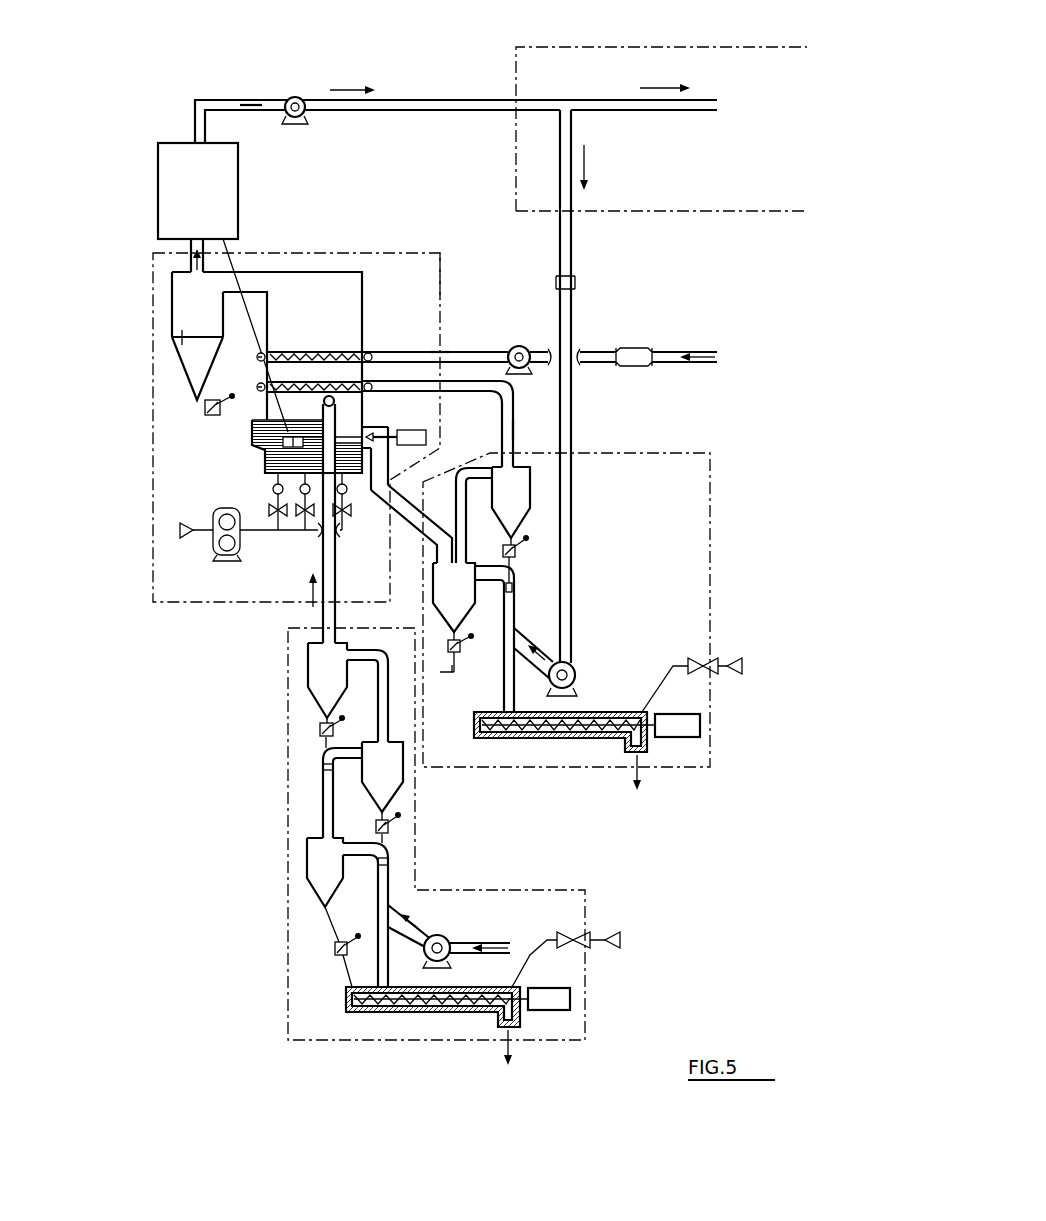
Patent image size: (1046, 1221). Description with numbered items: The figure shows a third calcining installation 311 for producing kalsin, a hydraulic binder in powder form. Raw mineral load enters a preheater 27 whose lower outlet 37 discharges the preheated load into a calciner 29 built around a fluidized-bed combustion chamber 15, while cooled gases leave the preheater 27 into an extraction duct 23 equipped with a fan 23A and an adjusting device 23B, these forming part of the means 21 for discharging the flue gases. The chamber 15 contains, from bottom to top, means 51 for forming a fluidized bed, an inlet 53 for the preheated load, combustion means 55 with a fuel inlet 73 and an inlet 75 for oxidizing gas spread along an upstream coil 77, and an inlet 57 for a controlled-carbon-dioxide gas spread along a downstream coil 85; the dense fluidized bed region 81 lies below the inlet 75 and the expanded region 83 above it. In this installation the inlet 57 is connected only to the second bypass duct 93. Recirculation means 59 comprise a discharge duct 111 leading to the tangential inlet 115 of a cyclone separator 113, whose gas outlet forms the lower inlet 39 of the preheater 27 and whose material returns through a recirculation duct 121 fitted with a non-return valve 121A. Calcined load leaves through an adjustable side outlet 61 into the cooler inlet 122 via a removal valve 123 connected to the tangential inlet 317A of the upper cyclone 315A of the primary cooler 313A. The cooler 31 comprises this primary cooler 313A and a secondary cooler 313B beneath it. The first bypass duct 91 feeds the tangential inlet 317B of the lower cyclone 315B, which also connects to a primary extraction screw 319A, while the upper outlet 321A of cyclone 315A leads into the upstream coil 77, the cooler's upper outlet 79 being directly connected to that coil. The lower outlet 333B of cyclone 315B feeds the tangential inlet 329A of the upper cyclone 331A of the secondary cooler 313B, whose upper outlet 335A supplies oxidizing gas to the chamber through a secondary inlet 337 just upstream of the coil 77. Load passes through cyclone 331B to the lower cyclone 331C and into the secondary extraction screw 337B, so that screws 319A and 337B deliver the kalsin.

The installation 311 is at (198, 76).
The means for discharging the flue gases 21 is at (515, 62).
The duct 23 is at (370, 115).
The fan 23A is at (293, 97).
The device for adjusting the fan 23B is at (259, 104).
The preheater 27 is at (198, 191).
The lower inlet 39 is at (190, 246).
The fluidized-bed combustion chamber 15 is at (429, 275).
The calciner 29 is at (153, 492).
The first bypass duct 91 is at (572, 310).
The second bypass duct 93 is at (667, 352).
The discharge duct 111 is at (270, 271).
The lower outlet 37 is at (238, 281).
The region of expanded fluidized bed 83 is at (351, 302).
The means for recirculating the calcined mineral load 59 is at (165, 320).
The cyclone separator 113 is at (180, 343).
The tangential inlet 115 is at (233, 258).
The downstream coil 85 is at (305, 352).
The upstream coil 77 is at (259, 386).
The recirculation duct 121 is at (252, 428).
The non-return valve 121A is at (205, 409).
The inlet for introducing the preheated mineral load 53 is at (262, 445).
The inlet for supplying fuel 73 is at (262, 468).
The region of dense fluidized bed 81 is at (332, 434).
The secondary inlet 337 is at (332, 396).
The upper outlet 335A is at (323, 622).
The means for forming a fluidized bed 51 is at (274, 550).
The inlet for injecting an oxidizing gas 75 is at (455, 370).
The inlet for introducing a treatment gas 57 is at (432, 340).
The upper outlet 79 is at (572, 384).
The upper outlet 321A is at (514, 425).
The valve 123 is at (437, 430).
The combustion means 55 is at (376, 418).
The side outlet 61 is at (378, 511).
The inlet for supplying the material 122 is at (412, 508).
The upper cyclone 315A is at (522, 492).
The tangential inlet 317A is at (468, 472).
The lower cyclone 315B is at (443, 592).
The lower outlet 333B is at (440, 672).
The tangential inlet 317B is at (510, 600).
The primary cooler 313A is at (718, 606).
The primary screw 319A is at (615, 710).
The cooler 31 is at (660, 888).
The secondary cooler 313B is at (600, 965).
The tangential inlet 329A is at (310, 656).
The upper cyclone 331A is at (315, 682).
The cyclone 331B is at (393, 773).
The lower cyclone 331C is at (318, 860).
The secondary product extraction screw 337B is at (410, 1012).